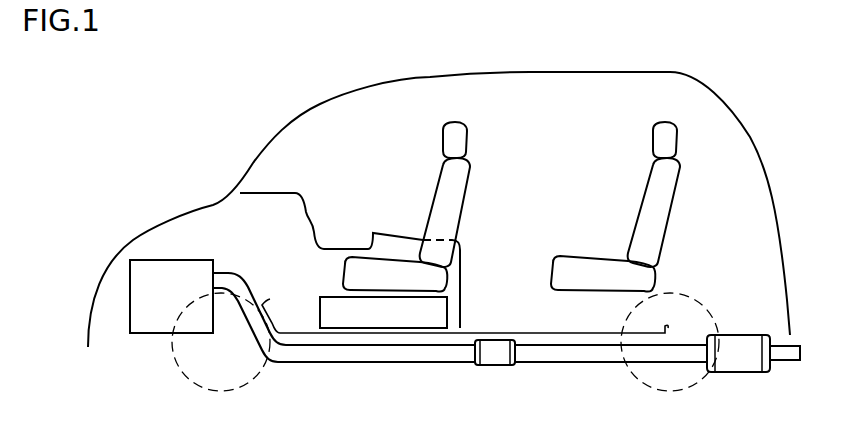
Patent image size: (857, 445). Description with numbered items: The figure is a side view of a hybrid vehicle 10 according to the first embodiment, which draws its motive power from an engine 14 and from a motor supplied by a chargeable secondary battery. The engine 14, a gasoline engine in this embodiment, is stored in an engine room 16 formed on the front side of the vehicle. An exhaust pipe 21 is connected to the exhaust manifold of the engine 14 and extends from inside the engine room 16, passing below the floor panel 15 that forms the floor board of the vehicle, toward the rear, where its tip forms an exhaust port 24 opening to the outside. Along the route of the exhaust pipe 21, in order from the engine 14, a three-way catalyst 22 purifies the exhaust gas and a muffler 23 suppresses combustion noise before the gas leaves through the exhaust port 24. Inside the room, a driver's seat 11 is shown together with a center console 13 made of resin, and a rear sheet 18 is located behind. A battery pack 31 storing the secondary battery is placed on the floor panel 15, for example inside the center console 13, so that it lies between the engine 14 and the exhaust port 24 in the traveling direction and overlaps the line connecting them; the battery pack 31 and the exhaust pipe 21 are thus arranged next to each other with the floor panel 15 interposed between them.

The hybrid vehicle 10 is at (205, 117).
The driver's seat 11 is at (455, 135).
The center console 13 is at (393, 247).
The engine 14 is at (142, 262).
The floor panel 15 is at (560, 335).
The engine room 16 is at (182, 235).
The rear sheet 18 is at (665, 133).
The exhaust pipe 21 is at (410, 364).
The three-way catalyst 22 is at (497, 358).
The muffler 23 is at (741, 360).
The exhaust port 24 is at (800, 352).
The battery pack 31 is at (362, 316).